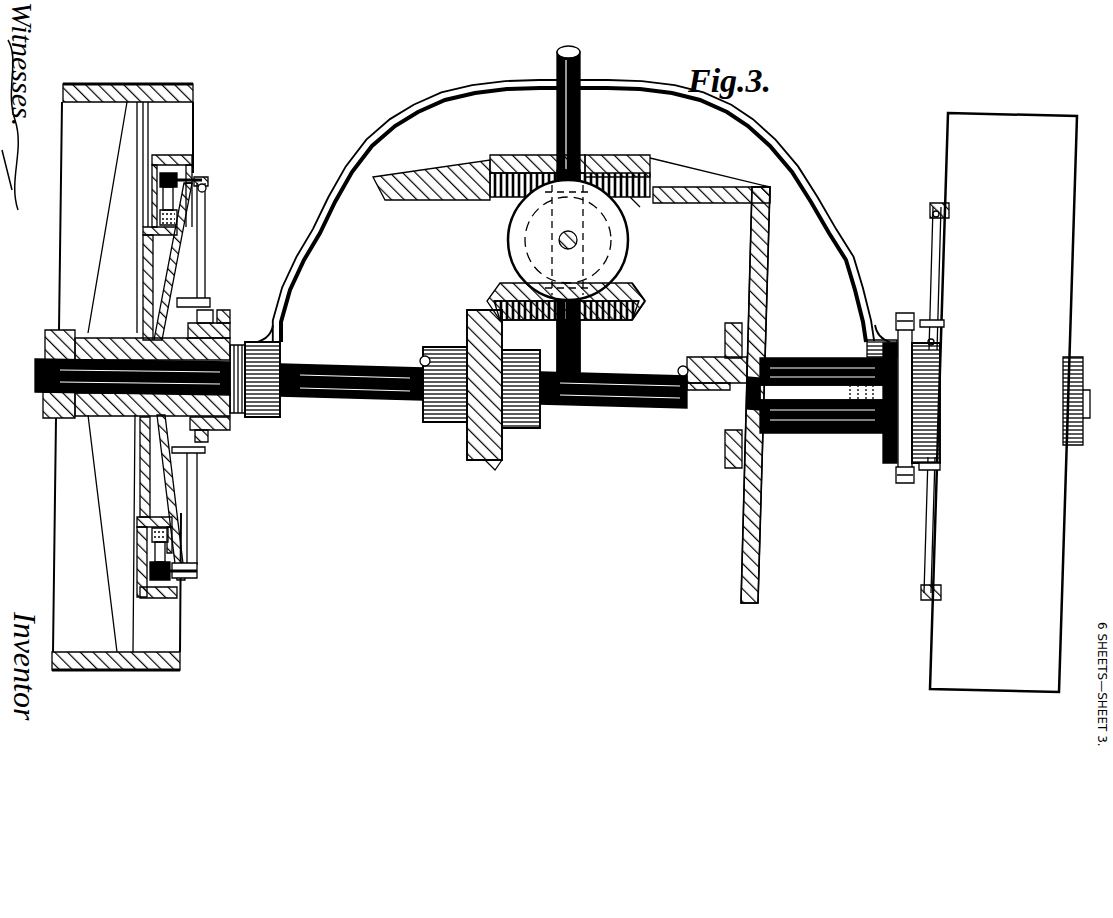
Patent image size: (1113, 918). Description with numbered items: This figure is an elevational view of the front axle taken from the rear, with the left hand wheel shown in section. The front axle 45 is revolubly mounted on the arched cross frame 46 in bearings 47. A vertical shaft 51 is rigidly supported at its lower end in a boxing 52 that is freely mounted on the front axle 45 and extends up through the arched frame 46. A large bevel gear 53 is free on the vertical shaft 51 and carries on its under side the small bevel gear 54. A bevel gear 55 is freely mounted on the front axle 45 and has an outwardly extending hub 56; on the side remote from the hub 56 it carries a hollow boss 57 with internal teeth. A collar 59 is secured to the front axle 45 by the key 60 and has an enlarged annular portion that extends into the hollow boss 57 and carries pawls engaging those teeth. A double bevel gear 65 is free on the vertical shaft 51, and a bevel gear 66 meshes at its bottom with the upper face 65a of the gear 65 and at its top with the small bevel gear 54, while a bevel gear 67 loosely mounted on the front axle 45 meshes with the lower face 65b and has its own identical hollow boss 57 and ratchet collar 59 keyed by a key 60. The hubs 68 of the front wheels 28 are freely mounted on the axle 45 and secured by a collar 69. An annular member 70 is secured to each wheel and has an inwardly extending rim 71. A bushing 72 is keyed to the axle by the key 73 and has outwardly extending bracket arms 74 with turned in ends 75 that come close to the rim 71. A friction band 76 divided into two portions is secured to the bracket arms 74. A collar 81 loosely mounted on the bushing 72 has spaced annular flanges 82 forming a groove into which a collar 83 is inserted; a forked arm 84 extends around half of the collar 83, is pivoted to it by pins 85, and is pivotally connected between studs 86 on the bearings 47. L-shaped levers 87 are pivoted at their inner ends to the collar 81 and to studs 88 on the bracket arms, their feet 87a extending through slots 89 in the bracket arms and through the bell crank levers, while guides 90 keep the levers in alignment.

The front wheel 28 is at (160, 100).
The front axle 45 is at (350, 398).
The arched cross frame 46 is at (312, 232).
The bearing 47 is at (280, 405).
The vertical shaft 51 is at (582, 62).
The boxing 52 is at (578, 404).
The large bevel gear 53 is at (680, 188).
The small bevel gear 54 is at (610, 223).
The bevel gear 55 is at (760, 327).
The hub 56 is at (805, 358).
The hollow boss 57 is at (475, 462).
The collar 59 is at (440, 347).
The key 60 is at (424, 357).
The double bevel gear 65 is at (497, 288).
The upper face 65a is at (638, 290).
The lower face 65b is at (656, 317).
The bevel gear 66 is at (509, 229).
The bevel gear 67 is at (497, 463).
The hub 68 is at (140, 377).
The collar 69 is at (45, 412).
The annular member 70 is at (161, 221).
The rim 71 is at (178, 232).
The bushing 72 is at (223, 310).
The key 73 is at (203, 467).
The bracket arm 74 is at (178, 507).
The turned in end 75 is at (167, 572).
The friction band 76 is at (206, 190).
The collar 81 is at (224, 327).
The annular flange 82 is at (206, 452).
The collar 83 is at (210, 436).
The forked arm 84 is at (895, 342).
The pin 85 is at (905, 313).
The stud 86 is at (850, 402).
The L-shaped lever 87 is at (207, 266).
The foot 87a is at (199, 181).
The stud 88 is at (178, 218).
The slot 89 is at (183, 156).
The guide 90 is at (210, 300).